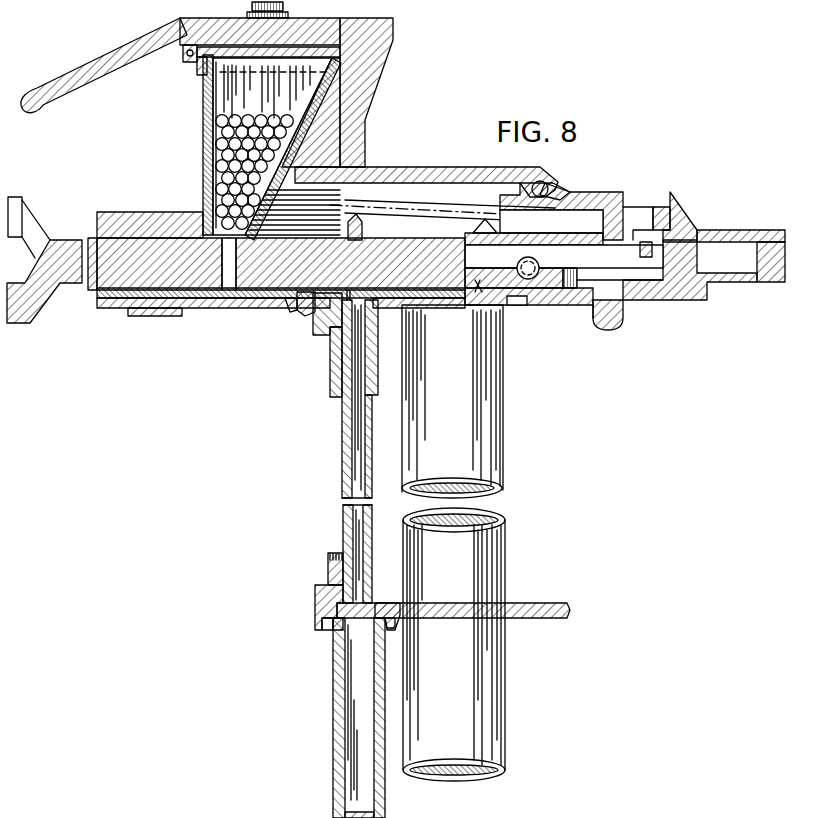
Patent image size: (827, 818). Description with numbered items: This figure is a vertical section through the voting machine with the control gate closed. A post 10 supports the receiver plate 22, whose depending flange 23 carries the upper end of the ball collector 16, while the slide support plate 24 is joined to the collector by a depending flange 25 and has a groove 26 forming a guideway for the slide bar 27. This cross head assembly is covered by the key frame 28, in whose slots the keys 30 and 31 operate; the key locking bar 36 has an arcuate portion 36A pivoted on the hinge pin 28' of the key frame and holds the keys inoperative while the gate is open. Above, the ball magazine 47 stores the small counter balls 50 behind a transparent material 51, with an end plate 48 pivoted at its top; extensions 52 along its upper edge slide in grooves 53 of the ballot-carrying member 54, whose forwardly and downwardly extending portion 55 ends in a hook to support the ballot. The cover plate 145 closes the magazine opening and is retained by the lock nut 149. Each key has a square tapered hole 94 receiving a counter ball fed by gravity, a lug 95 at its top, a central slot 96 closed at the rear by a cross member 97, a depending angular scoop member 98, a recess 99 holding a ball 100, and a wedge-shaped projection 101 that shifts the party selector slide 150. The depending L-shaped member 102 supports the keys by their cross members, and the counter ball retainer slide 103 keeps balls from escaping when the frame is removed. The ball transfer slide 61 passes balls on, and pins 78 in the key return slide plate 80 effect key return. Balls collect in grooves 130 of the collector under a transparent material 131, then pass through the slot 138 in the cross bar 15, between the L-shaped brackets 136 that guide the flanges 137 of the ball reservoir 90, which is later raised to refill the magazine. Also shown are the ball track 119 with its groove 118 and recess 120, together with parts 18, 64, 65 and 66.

The post 10 is at (496, 690).
The cross bar 15 is at (543, 605).
The ball collector 16 is at (343, 458).
The lower tube portion 18 is at (311, 813).
The receiver plate 22 is at (527, 306).
The depending flange 23 is at (380, 378).
The slide support plate 24 is at (132, 315).
The depending flange 25 is at (333, 374).
The groove 26 is at (332, 337).
The slide bar 27 is at (305, 324).
The key frame 28 is at (704, 229).
The hinge pin 28' is at (572, 186).
The key 30 is at (10, 325).
The key 31 is at (25, 205).
The key locking bar 36 is at (388, 180).
The arcuate portion 36A is at (548, 180).
The ball magazine 47 is at (318, 103).
The end plate 48 is at (215, 88).
The counter ball 50 is at (272, 120).
The transparent material 51 is at (203, 104).
The extension 52 is at (350, 56).
The groove 53 is at (346, 42).
The ballot-carrying member 54 is at (378, 135).
The forwardly and downwardly extending portion 55 is at (106, 60).
The ball transfer slide 61 is at (226, 306).
The gasket layer 64 is at (388, 296).
The flange 65 is at (292, 310).
The pin 66 is at (351, 290).
The pin 78 is at (472, 219).
The key return slide plate 80 is at (540, 232).
The ball reservoir 90 is at (340, 714).
The square tapered hole 94 is at (237, 270).
The lug 95 is at (346, 213).
The slot 96 is at (588, 236).
The cross member 97 is at (654, 253).
The angular scoop member 98 is at (578, 278).
The recess 99 is at (515, 262).
The ball 100 is at (540, 266).
The wedge-shaped projection 101 is at (514, 279).
The L-shaped member 102 is at (618, 190).
The counter ball retainer slide 103 is at (98, 296).
The groove 118 is at (632, 280).
The ball track 119 is at (603, 302).
The recess 120 is at (606, 324).
The groove 130 is at (354, 480).
The transparent material 131 is at (362, 433).
The L-shaped bracket 136 is at (320, 632).
The flange 137 is at (325, 620).
The slot 138 is at (316, 606).
The cover plate 145 is at (300, 14).
The lock nut 149 is at (250, 6).
The party selector slide 150 is at (472, 316).